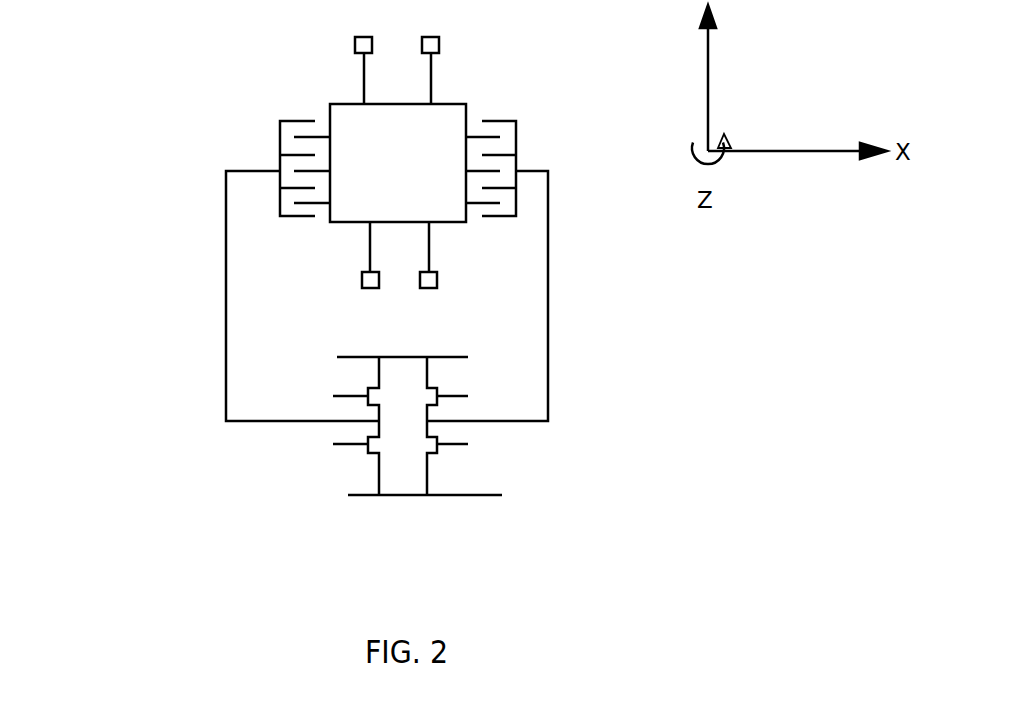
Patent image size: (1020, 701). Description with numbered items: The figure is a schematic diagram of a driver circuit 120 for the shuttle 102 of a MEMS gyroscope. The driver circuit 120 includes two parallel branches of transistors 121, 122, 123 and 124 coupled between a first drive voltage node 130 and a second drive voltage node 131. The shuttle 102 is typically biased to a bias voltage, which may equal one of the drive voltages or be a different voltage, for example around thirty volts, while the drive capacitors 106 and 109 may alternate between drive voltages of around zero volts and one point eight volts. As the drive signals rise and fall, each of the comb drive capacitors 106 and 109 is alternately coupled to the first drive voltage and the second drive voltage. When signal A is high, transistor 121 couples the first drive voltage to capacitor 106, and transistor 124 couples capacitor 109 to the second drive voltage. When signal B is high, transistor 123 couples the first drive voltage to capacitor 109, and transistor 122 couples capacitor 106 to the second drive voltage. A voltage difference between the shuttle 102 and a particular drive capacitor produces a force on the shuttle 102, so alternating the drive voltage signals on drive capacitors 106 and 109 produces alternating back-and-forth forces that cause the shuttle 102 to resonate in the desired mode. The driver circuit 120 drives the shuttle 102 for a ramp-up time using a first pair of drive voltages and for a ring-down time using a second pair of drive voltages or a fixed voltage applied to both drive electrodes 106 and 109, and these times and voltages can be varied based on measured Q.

The shuttle 102 is at (450, 198).
The drive capacitor 106 is at (300, 92).
The drive capacitor 109 is at (487, 92).
The driver circuit 120 is at (164, 420).
The transistor 121 is at (362, 380).
The transistor 122 is at (363, 467).
The transistor 123 is at (433, 377).
The transistor 124 is at (445, 465).
The first drive voltage node 130 is at (500, 345).
The second drive voltage node 131 is at (508, 496).